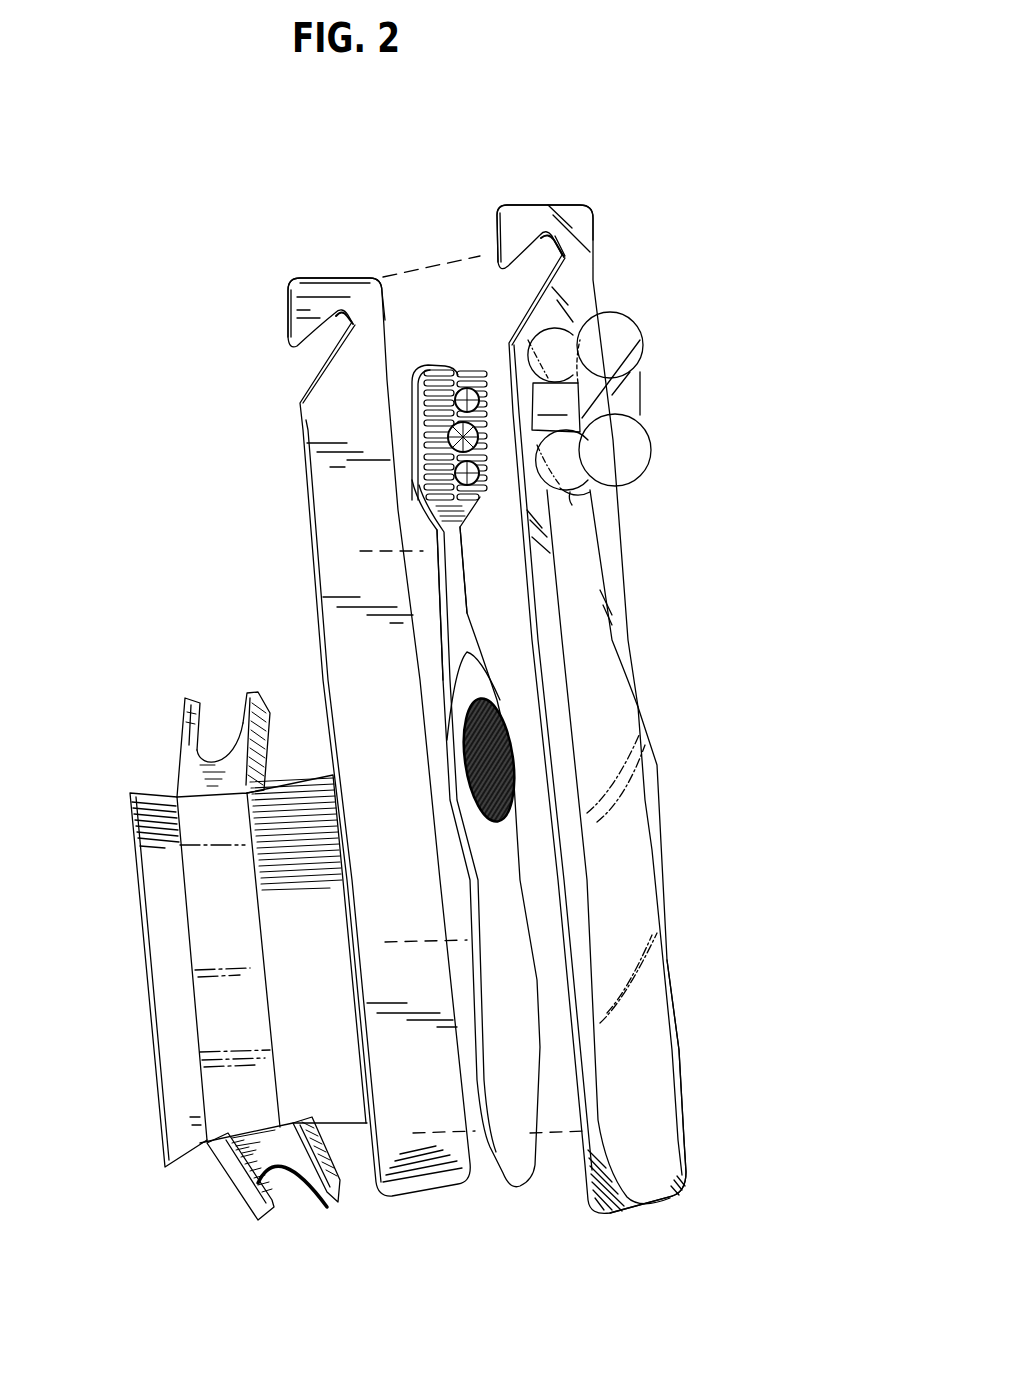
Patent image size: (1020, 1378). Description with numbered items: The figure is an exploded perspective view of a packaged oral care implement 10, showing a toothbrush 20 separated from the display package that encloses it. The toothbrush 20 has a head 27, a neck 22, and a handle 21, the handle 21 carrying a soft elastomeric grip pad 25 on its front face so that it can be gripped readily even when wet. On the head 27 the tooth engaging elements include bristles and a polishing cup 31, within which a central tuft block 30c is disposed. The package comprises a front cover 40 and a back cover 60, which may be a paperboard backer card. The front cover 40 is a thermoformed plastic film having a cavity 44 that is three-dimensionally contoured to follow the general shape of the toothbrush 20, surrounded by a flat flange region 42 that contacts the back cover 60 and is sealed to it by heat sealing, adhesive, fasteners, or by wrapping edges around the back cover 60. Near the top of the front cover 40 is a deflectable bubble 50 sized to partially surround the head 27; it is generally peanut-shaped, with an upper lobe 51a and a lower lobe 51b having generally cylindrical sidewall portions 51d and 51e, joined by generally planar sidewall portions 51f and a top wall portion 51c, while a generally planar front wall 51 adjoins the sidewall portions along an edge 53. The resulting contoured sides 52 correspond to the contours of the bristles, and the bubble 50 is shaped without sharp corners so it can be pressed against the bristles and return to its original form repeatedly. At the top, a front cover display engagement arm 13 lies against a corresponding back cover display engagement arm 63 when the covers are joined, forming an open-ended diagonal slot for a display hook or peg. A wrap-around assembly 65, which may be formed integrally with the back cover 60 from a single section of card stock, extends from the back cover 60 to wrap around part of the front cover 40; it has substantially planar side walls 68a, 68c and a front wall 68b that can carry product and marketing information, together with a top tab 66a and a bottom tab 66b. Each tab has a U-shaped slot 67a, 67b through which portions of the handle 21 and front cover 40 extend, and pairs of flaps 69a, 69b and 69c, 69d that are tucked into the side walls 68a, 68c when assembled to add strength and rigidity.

The packaged oral care implement 10 is at (608, 170).
The front cover display engagement arm 13 is at (524, 218).
The toothbrush 20 is at (467, 776).
The handle 21 is at (510, 952).
The neck 22 is at (458, 580).
The grip pad 25 is at (510, 770).
The head 27 is at (399, 428).
The central tuft block 30c is at (498, 499).
The polishing cup 31 is at (437, 445).
The front cover 40 is at (573, 280).
The flange region 42 is at (603, 1167).
The cavity 44 is at (700, 833).
The bubble 50 is at (596, 419).
The front wall 51 is at (643, 440).
The upper lobe 51a is at (590, 305).
The lower lobe 51b is at (618, 470).
The top wall portion 51c is at (620, 410).
The cylindrical sidewall portion 51d is at (528, 350).
The cylindrical sidewall portion 51e is at (570, 492).
The planar sidewall portion 51f is at (637, 390).
The contoured sides 52 is at (533, 370).
The edge 53 is at (568, 490).
The back cover 60 is at (345, 505).
The back cover display engagement arm 63 is at (320, 290).
The wrap-around assembly 65 is at (221, 970).
The top tab 66a is at (209, 722).
The bottom tab 66b is at (252, 1205).
The U-shaped slot 67a is at (243, 728).
The U-shaped slot 67b is at (307, 1203).
The side wall 68a is at (318, 953).
The front wall 68b is at (228, 1018).
The side wall 68c is at (172, 990).
The flap 69a is at (180, 775).
The flap 69b is at (257, 763).
The flap 69c is at (228, 1148).
The flap 69d is at (335, 1197).